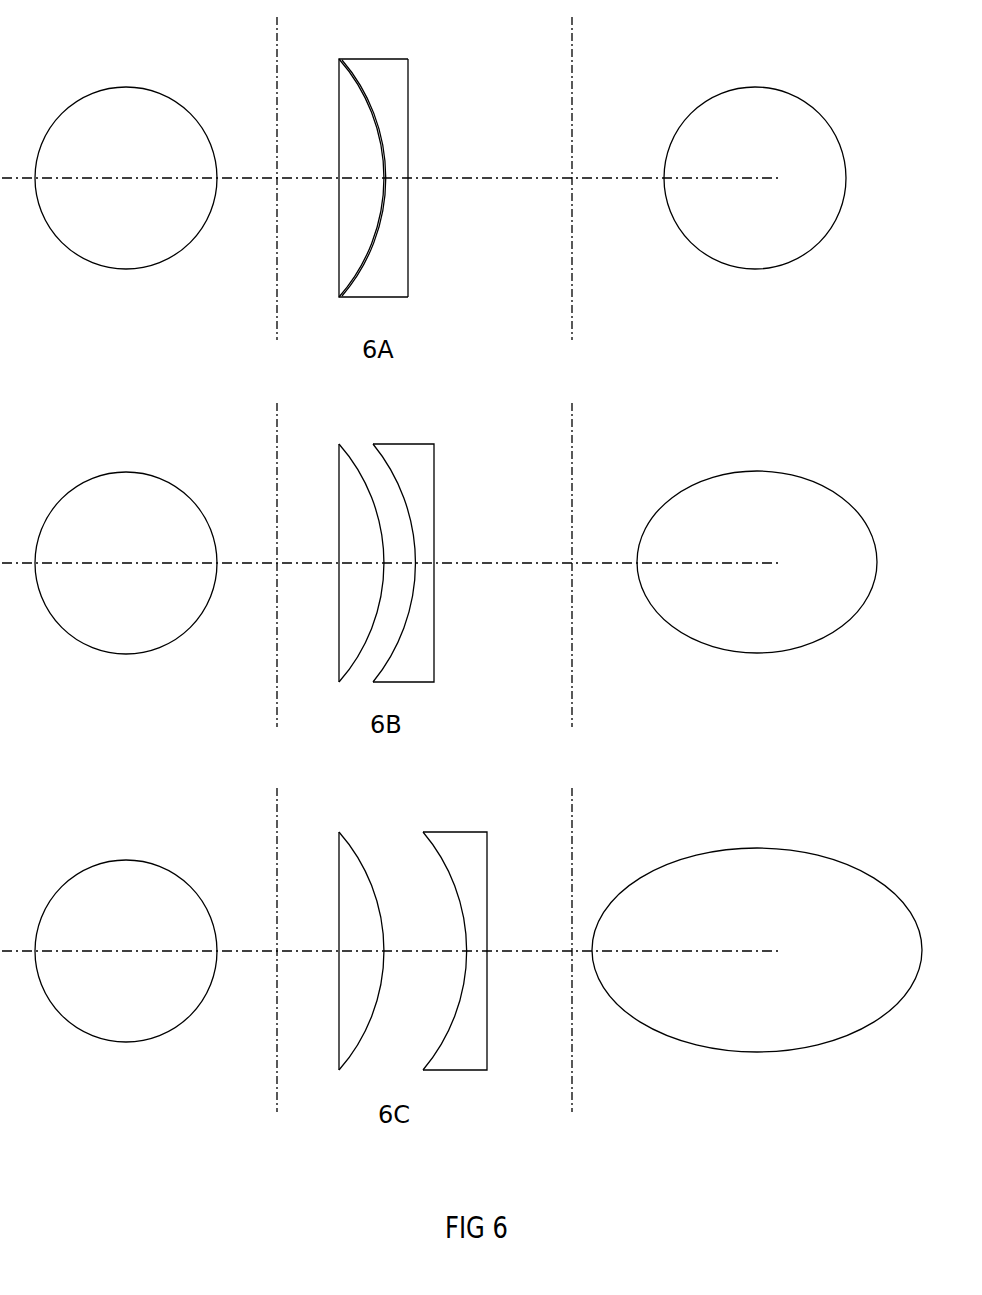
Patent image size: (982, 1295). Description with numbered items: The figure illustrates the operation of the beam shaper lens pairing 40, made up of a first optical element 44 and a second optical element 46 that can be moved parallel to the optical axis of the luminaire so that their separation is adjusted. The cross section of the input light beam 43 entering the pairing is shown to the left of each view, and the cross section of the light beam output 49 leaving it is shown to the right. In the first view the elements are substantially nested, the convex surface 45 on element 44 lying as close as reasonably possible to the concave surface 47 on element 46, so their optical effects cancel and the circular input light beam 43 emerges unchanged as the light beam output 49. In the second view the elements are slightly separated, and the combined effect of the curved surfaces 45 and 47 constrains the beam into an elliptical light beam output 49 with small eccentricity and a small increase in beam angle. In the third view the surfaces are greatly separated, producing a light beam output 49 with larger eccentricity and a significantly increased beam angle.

In FIG. 6A, the beam shaper lens pairing 40 is at (392, 178).
In FIG. 6B, the beam shaper lens pairing 40 is at (407, 553).
In FIG. 6C, the beam shaper lens pairing 40 is at (423, 955).
In FIG. 6A, the input light beam 43 is at (120, 117).
In FIG. 6B, the input light beam 43 is at (120, 503).
In FIG. 6C, the input light beam 43 is at (120, 892).
In FIG. 6A, the first optical element 44 is at (348, 83).
In FIG. 6B, the first optical element 44 is at (348, 468).
In FIG. 6C, the first optical element 44 is at (348, 855).
In FIG. 6A, the convex surface 45 is at (377, 253).
In FIG. 6B, the convex surface 45 is at (378, 617).
In FIG. 6C, the convex surface 45 is at (378, 997).
In FIG. 6A, the second optical element 46 is at (399, 79).
In FIG. 6B, the second optical element 46 is at (425, 458).
In FIG. 6C, the second optical element 46 is at (477, 847).
In FIG. 6A, the concave surface 47 is at (383, 237).
In FIG. 6B, the concave surface 47 is at (408, 623).
In FIG. 6C, the concave surface 47 is at (460, 1007).
In FIG. 6A, the light beam output 49 is at (705, 122).
In FIG. 6B, the light beam output 49 is at (688, 500).
In FIG. 6C, the light beam output 49 is at (683, 887).